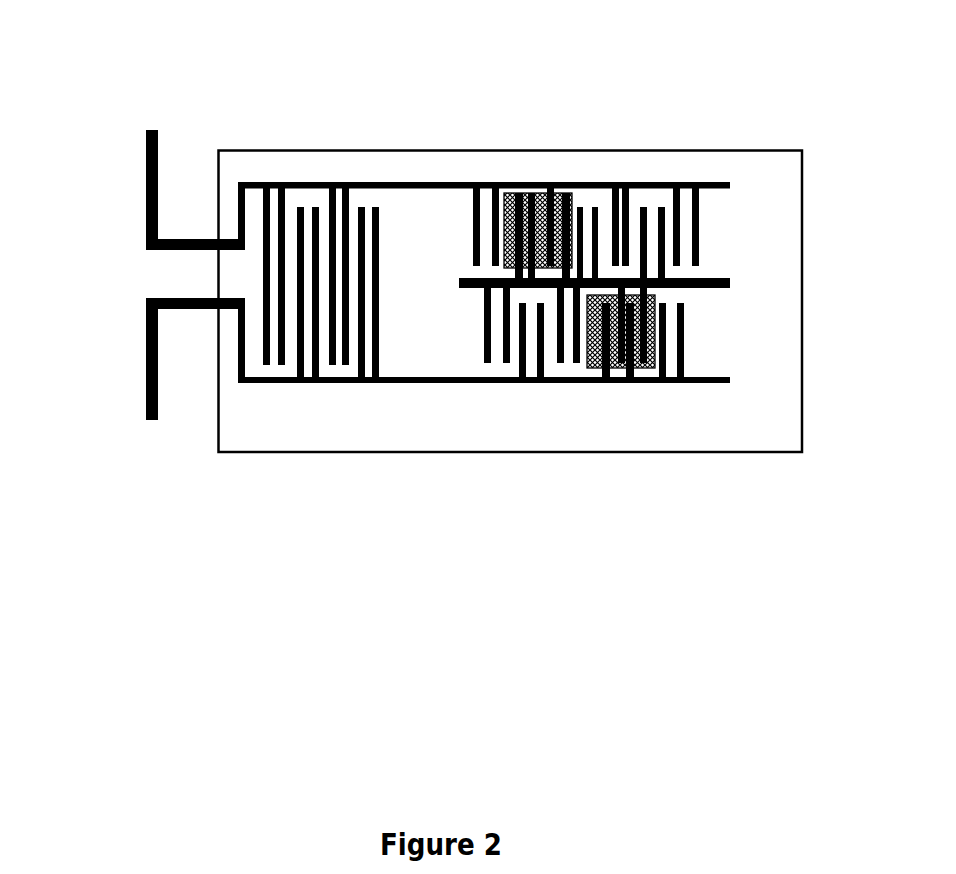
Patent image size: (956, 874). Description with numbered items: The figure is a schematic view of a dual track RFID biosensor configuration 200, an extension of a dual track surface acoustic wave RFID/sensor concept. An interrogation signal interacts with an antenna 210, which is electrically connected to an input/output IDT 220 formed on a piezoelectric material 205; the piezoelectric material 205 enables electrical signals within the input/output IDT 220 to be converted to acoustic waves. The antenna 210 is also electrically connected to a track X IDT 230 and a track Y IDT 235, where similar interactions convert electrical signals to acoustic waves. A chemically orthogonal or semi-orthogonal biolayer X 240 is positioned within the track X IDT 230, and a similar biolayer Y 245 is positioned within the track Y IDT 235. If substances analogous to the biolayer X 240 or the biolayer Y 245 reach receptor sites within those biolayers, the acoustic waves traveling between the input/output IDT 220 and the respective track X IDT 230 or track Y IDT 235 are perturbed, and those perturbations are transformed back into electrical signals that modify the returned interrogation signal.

The dual track RFID biosensor configuration 200 is at (312, 621).
The piezoelectric material 205 is at (308, 430).
The antenna 210 is at (138, 270).
The input/output IDT 220 is at (313, 178).
The track X IDT 230 is at (465, 226).
The track Y IDT 235 is at (464, 323).
The biolayer X 240 is at (578, 195).
The biolayer Y 245 is at (649, 368).